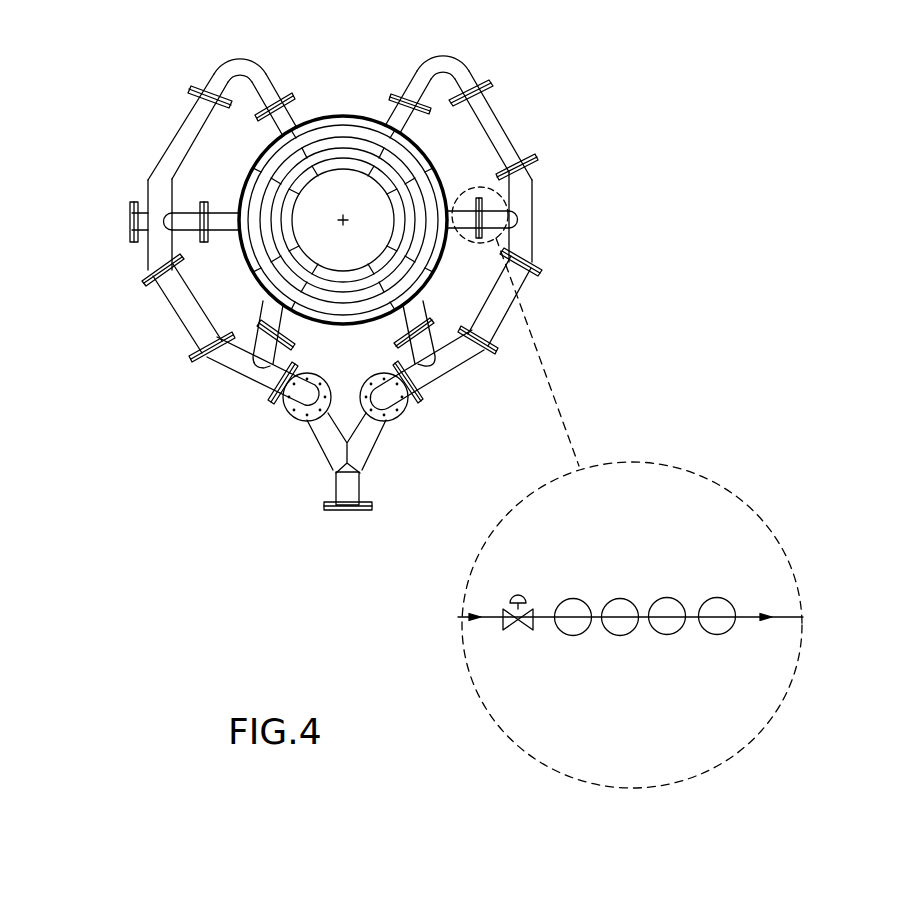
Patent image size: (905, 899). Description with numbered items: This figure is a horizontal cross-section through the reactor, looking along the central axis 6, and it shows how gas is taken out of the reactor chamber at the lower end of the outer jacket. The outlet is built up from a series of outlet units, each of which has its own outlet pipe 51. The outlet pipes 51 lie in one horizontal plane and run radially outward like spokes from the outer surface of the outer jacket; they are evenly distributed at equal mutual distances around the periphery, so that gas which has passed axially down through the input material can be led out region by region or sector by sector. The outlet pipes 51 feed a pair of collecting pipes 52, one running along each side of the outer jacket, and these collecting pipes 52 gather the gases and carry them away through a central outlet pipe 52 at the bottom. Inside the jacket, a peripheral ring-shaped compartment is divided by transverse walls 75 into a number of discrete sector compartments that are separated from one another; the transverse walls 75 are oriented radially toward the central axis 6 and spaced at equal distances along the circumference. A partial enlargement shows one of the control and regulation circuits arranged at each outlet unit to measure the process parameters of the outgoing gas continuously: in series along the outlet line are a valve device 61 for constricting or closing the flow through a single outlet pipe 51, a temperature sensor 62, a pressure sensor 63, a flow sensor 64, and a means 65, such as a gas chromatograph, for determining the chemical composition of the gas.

The central axis 6 is at (343, 219).
The transverse walls 75 is at (288, 275).
The outlet pipe 51 is at (436, 125).
The collecting pipe 52 is at (122, 263).
The valve device 61 is at (507, 630).
The temperature sensor 62 is at (573, 599).
The pressure sensor 63 is at (620, 636).
The flow sensor 64 is at (667, 597).
The means for determination of chemical composition 65 is at (718, 635).